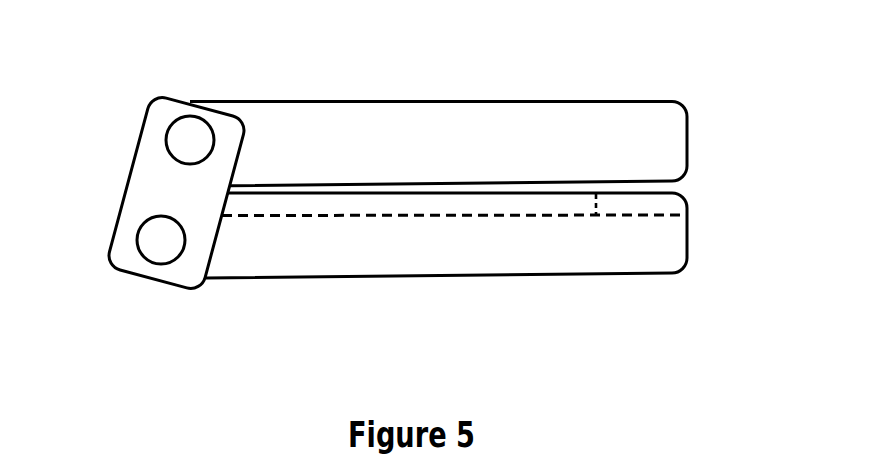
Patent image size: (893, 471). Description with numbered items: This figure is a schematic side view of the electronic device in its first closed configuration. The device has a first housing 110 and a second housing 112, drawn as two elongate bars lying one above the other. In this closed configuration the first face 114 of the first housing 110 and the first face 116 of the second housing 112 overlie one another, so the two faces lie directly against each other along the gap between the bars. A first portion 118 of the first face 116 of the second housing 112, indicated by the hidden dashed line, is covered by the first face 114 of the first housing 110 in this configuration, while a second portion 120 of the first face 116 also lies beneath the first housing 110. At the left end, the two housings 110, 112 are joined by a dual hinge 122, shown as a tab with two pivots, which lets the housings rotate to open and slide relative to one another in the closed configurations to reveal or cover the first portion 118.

The first housing 110 is at (318, 128).
The second housing 112 is at (320, 263).
The first face of the first housing 114 is at (407, 185).
The first face of the second housing 116 is at (408, 194).
The first portion of the first face of the second housing 118 is at (633, 202).
The second portion of the first face of the second housing 120 is at (528, 207).
The dual hinge 122 is at (175, 193).